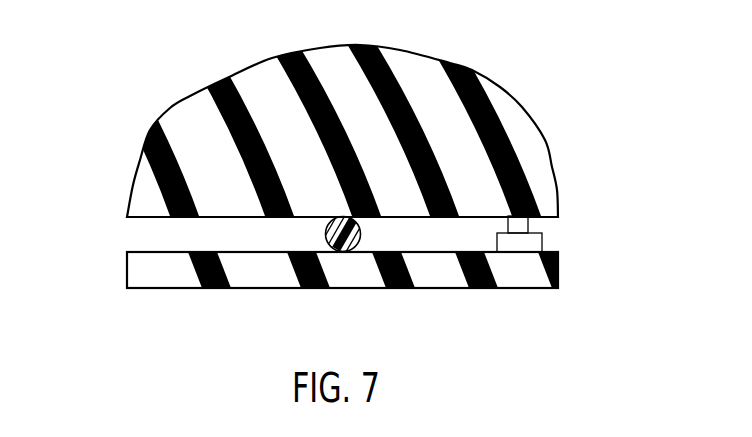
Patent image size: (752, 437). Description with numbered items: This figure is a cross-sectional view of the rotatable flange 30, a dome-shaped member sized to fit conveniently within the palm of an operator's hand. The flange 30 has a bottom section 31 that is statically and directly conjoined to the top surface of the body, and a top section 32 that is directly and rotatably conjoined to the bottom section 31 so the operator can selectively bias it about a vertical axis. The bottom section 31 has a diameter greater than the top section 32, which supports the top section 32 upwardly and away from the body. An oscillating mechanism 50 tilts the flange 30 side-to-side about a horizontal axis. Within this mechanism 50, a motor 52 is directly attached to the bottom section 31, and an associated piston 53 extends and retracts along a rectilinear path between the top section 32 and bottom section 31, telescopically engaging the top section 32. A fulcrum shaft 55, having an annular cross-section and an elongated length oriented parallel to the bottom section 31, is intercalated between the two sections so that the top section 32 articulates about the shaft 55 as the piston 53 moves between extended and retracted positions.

The flange 30 is at (100, 75).
The bottom section 31 is at (560, 272).
The top section 32 is at (536, 130).
The mechanism 50 is at (552, 242).
The motor 52 is at (498, 238).
The piston 53 is at (537, 224).
The fulcrum shaft 55 is at (324, 242).